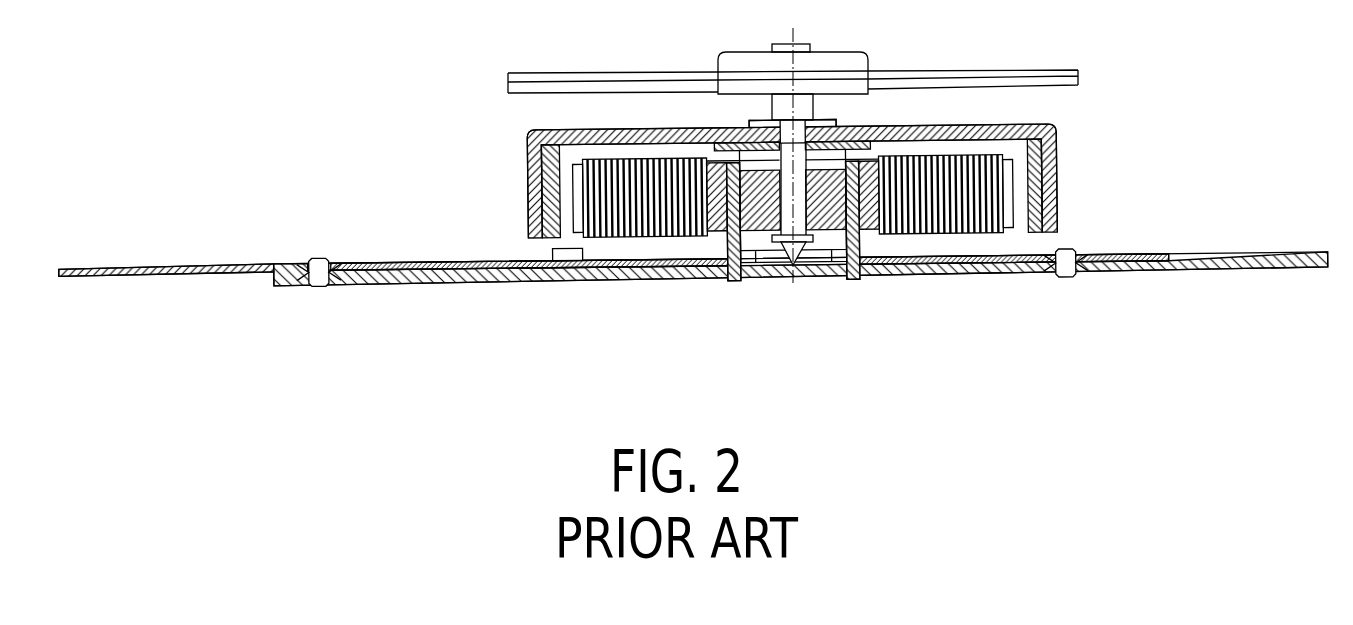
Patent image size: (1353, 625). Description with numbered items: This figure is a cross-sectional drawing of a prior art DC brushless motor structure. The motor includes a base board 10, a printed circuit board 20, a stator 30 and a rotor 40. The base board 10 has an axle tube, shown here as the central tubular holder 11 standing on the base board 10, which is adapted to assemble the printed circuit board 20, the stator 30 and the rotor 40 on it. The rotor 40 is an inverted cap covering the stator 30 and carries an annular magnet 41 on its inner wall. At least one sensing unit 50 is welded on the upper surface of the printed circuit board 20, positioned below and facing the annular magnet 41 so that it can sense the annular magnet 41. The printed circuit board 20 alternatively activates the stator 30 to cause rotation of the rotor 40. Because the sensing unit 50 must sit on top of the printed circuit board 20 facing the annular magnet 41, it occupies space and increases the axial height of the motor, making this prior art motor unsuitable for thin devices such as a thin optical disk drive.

The base board 10 is at (1238, 267).
The printed circuit board 20 is at (1122, 262).
The stator 30 is at (967, 203).
The rotor 40 is at (1057, 145).
The annular magnet 41 is at (528, 185).
The bearing holder 11 is at (852, 207).
The sensing unit 50 is at (565, 253).